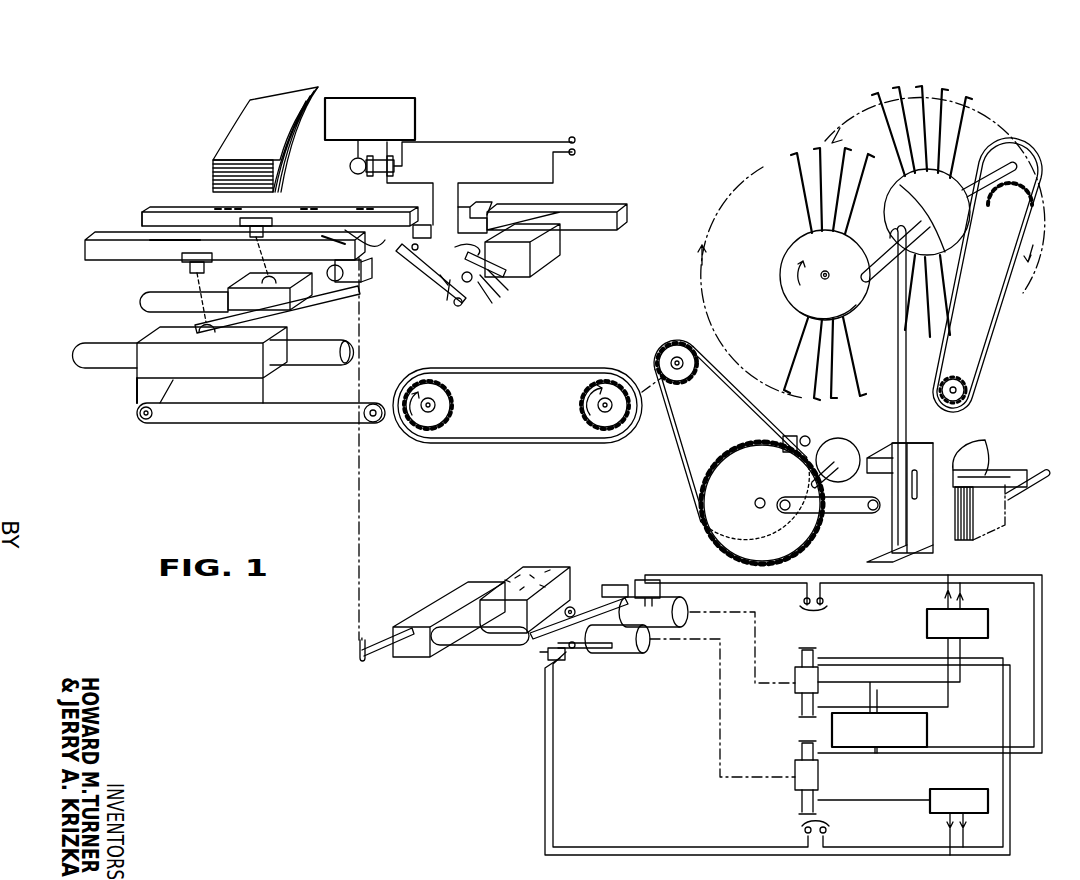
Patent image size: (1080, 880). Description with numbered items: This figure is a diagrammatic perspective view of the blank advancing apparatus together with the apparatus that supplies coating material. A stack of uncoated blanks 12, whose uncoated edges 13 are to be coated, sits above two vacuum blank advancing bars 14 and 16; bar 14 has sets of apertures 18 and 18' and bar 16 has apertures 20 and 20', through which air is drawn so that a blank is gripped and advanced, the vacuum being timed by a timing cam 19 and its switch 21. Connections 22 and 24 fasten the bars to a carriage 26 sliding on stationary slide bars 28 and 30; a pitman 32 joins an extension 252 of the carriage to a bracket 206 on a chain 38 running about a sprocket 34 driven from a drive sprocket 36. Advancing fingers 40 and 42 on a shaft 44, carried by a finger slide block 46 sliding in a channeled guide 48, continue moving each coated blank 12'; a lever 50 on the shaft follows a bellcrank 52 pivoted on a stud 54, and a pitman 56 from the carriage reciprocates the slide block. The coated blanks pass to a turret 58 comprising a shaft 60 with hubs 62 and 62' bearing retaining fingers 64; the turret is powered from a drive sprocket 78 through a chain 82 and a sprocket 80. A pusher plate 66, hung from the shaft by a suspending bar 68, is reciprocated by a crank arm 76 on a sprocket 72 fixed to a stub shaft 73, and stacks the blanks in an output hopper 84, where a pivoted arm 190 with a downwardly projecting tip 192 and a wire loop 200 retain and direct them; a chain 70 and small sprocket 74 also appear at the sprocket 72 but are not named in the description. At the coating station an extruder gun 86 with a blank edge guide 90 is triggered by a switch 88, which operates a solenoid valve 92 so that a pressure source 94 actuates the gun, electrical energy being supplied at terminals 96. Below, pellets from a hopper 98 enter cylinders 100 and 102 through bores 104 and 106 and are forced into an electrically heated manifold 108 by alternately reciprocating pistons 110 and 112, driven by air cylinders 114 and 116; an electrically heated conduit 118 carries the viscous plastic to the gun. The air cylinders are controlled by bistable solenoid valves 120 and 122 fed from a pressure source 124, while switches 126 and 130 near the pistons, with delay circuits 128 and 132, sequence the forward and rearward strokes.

The uncoated blanks 12 is at (243, 139).
The uncoated edges 13 is at (213, 178).
The vacuum blank advancing bar 14 is at (145, 212).
The vacuum blank advancing bar 16 is at (85, 242).
The set of apertures 18 is at (280, 203).
The set of apertures 18' is at (342, 214).
The set of apertures 20 is at (151, 226).
The set of apertures 20' is at (317, 213).
The connection 22 is at (250, 270).
The connection 24 is at (190, 262).
The carriage 26 is at (130, 329).
The slide bar 28 is at (145, 300).
The slide bar 30 is at (90, 370).
The pitman 32 is at (255, 425).
The sprocket 34 is at (458, 395).
The drive sprocket 36 is at (582, 413).
The chain 38 is at (528, 443).
The advancing finger 40 is at (490, 210).
The advancing finger 42 is at (430, 282).
The shaft 44 is at (458, 305).
The finger slide block 46 is at (560, 245).
The channeled guide 48 is at (595, 206).
The lever 50 is at (465, 260).
The bellcrank 52 is at (492, 277).
The stud 54 is at (470, 308).
The pitman 56 is at (445, 290).
The turret 58 is at (705, 222).
The shaft 60 is at (876, 248).
The hub 62 is at (797, 275).
The hub 62' is at (935, 195).
The blank retaining fingers 64 is at (808, 186).
The pusher plate 66 is at (935, 545).
The suspending bar 68 is at (888, 372).
The chain 70 is at (688, 385).
The sprocket 72 is at (700, 483).
The stub shaft 73 is at (758, 508).
The sprocket 74 is at (690, 348).
The crank arm 76 is at (836, 514).
The drive sprocket 78 is at (985, 385).
The sprocket 80 is at (1008, 208).
The chain 82 is at (1022, 257).
The output hopper 84 is at (1005, 472).
The extruder gun 86 is at (358, 296).
The switch 88 is at (420, 225).
The blank edge guide 90 is at (368, 232).
The solenoid operated valve 92 is at (405, 160).
The pressure source 94 is at (378, 98).
The terminals 96 is at (592, 152).
The hopper 98 is at (558, 568).
The cylinder 100 is at (465, 645).
The cylinder 102 is at (486, 600).
The bore 104 is at (530, 642).
The bore 106 is at (573, 607).
The electrically heated manifold 108 is at (440, 612).
The piston 110 is at (580, 650).
The piston 112 is at (615, 585).
The air cylinder 114 is at (625, 652).
The air cylinder 116 is at (688, 610).
The electrically heated conduit 118 is at (353, 692).
The solenoid valve 120 is at (790, 790).
The solenoid valve 122 is at (790, 690).
The pressure source 124 is at (930, 728).
The switch 126 is at (552, 660).
The delay circuit 128 is at (925, 808).
The switch 130 is at (648, 582).
The delay circuit 132 is at (925, 620).
The pivoted arm 190 is at (1038, 478).
The downwardly projecting tip 192 is at (902, 502).
The wire loop 200 is at (985, 440).
The bracket 206 is at (378, 424).
The extension 252 is at (137, 398).
The coated blank 12' is at (997, 524).
The timing cam 19 is at (848, 440).
The switch 21 is at (792, 438).